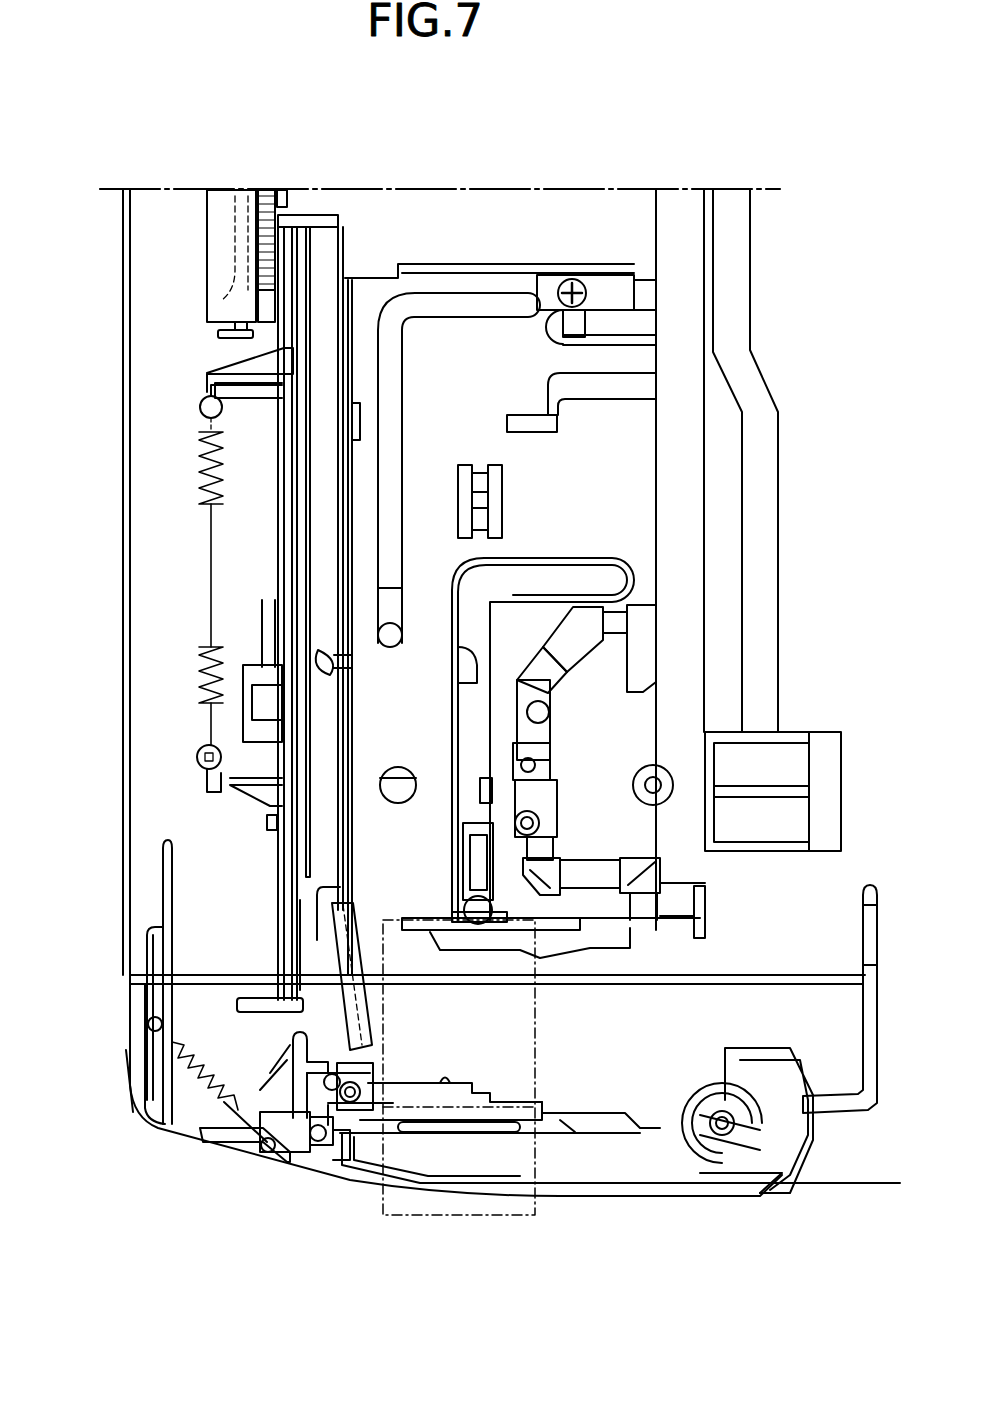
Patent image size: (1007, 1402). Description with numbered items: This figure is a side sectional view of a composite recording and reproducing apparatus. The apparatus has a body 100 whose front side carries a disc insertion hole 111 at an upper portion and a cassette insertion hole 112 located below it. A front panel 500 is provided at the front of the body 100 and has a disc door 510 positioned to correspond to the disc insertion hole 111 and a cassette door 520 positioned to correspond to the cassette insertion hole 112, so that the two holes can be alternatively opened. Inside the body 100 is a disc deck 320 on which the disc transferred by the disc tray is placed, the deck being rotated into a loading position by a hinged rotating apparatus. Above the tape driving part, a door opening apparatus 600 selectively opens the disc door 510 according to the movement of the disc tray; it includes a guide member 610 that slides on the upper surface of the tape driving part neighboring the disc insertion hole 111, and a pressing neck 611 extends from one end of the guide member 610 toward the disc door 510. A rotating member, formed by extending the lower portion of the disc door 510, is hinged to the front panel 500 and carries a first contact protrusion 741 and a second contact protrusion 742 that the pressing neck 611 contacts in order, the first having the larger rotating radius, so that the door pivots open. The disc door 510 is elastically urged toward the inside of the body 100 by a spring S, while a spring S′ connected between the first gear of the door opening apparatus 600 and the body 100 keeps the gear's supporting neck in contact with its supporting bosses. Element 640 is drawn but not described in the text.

The body 100 is at (123, 598).
The disc insertion hole 111 is at (217, 958).
The cassette insertion hole 112 is at (512, 960).
The disc deck 320 is at (208, 240).
The front panel 500 is at (128, 1077).
The disc door 510 is at (240, 1158).
The cassette door 520 is at (448, 1085).
The door opening apparatus 600 is at (214, 940).
The guide member 610 is at (272, 945).
The pressing neck 611 is at (237, 1004).
The pin 640 is at (264, 1080).
The first contact protrusion 741 is at (303, 1148).
The second contact protrusion 742 is at (323, 1135).
The spring S is at (182, 1122).
The spring S′ is at (211, 538).